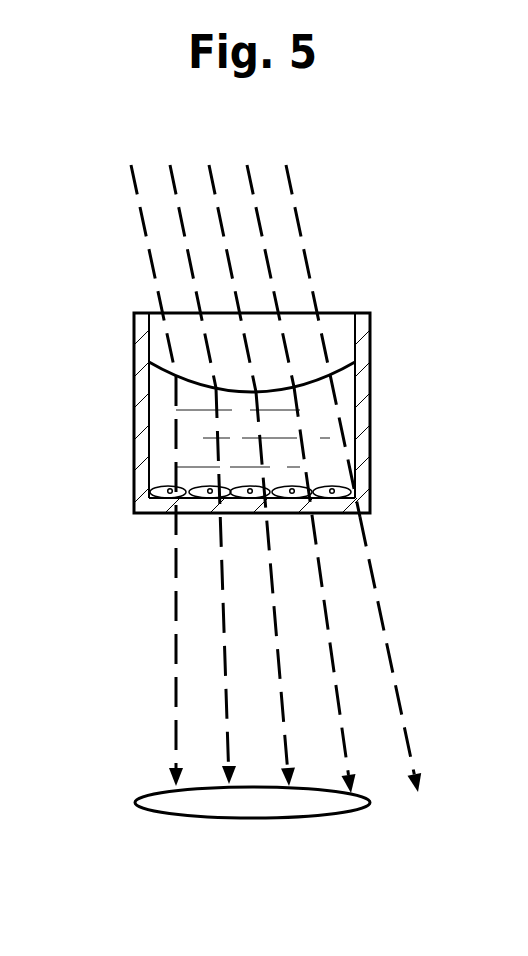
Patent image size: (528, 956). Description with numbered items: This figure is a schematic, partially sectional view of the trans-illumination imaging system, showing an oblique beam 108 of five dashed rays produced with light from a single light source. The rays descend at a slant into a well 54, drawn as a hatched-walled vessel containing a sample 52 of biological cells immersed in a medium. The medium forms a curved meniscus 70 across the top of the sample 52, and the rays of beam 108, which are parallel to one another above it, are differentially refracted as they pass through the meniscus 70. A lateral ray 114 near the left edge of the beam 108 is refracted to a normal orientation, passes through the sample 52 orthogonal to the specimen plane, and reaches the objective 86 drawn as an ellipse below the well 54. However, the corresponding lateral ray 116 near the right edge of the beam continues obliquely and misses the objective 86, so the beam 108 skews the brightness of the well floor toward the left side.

The oblique beam 108 is at (318, 211).
The well 54 is at (152, 323).
The sample 52 is at (165, 357).
The meniscus 70 is at (334, 372).
The lateral ray 114 is at (173, 666).
The lateral ray 116 is at (392, 667).
The objective 86 is at (335, 815).